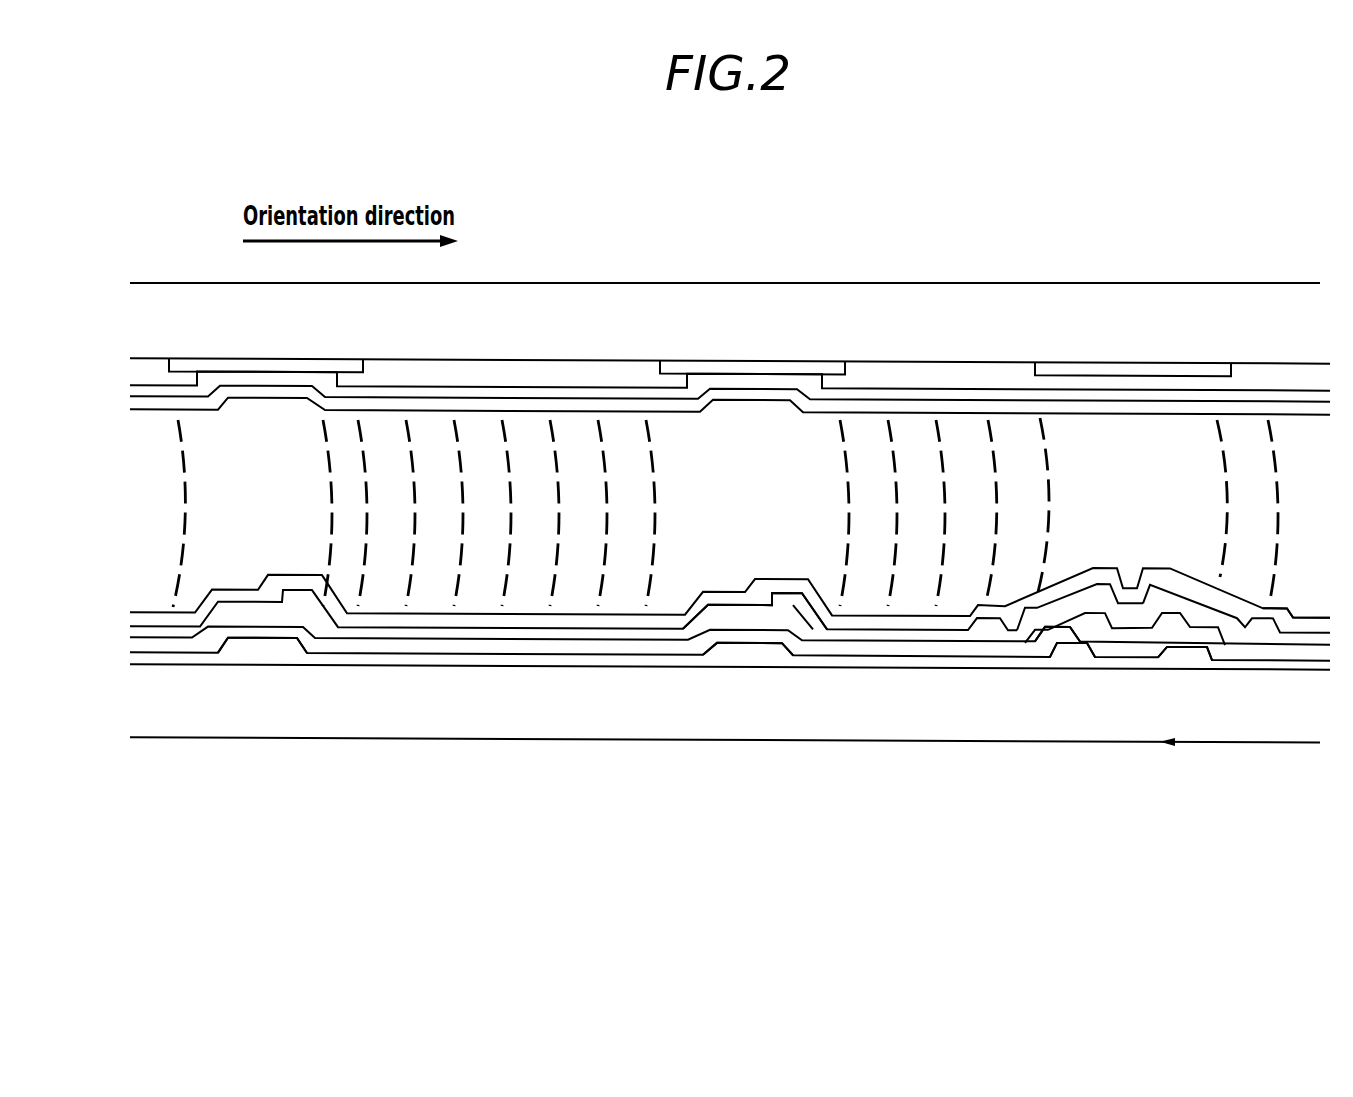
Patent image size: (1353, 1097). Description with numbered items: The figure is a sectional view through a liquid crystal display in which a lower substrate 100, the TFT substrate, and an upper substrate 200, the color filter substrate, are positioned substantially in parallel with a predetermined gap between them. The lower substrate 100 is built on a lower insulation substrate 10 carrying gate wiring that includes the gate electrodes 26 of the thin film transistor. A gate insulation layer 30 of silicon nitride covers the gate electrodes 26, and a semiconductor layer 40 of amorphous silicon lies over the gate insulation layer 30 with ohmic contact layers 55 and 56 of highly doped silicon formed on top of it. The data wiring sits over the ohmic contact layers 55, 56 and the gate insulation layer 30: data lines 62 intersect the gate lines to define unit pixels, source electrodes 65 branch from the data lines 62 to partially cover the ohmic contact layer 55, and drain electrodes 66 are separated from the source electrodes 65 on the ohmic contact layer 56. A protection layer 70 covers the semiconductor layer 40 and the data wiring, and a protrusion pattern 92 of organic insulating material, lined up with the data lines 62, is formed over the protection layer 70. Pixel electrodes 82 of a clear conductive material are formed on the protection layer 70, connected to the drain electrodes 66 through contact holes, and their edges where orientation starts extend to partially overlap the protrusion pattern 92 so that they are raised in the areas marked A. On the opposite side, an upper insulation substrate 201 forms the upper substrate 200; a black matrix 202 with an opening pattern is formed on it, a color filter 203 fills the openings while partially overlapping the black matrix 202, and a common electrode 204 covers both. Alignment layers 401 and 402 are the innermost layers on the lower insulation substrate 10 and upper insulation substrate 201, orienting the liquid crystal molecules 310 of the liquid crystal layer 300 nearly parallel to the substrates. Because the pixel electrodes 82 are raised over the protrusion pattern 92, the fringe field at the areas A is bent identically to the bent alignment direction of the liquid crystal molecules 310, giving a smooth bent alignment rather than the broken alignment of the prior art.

The lower insulation substrate 10 is at (742, 728).
The gate electrode 26 is at (1150, 650).
The gate insulation layer 30 is at (920, 658).
The semiconductor layer 40 is at (1090, 655).
The ohmic contact layer 55 is at (1196, 650).
The ohmic contact layer 56 is at (1075, 650).
The data line 62 is at (263, 648).
The source electrode 65 is at (1250, 650).
The drain electrode 66 is at (1033, 645).
The protection layer 70 is at (975, 645).
The pixel electrode 82 is at (405, 637).
The protrusion pattern 92 is at (700, 637).
The lower substrate 100 is at (601, 765).
The upper substrate 200 is at (672, 258).
The upper insulation substrate 201 is at (742, 303).
The black matrix 202 is at (800, 360).
The color filter 203 is at (598, 372).
The common electrode 204 is at (488, 390).
The liquid crystal layer 300 is at (1115, 410).
The liquid crystal molecule 310 is at (463, 602).
The alignment layer 401 is at (1305, 620).
The alignment layer 402 is at (1151, 405).